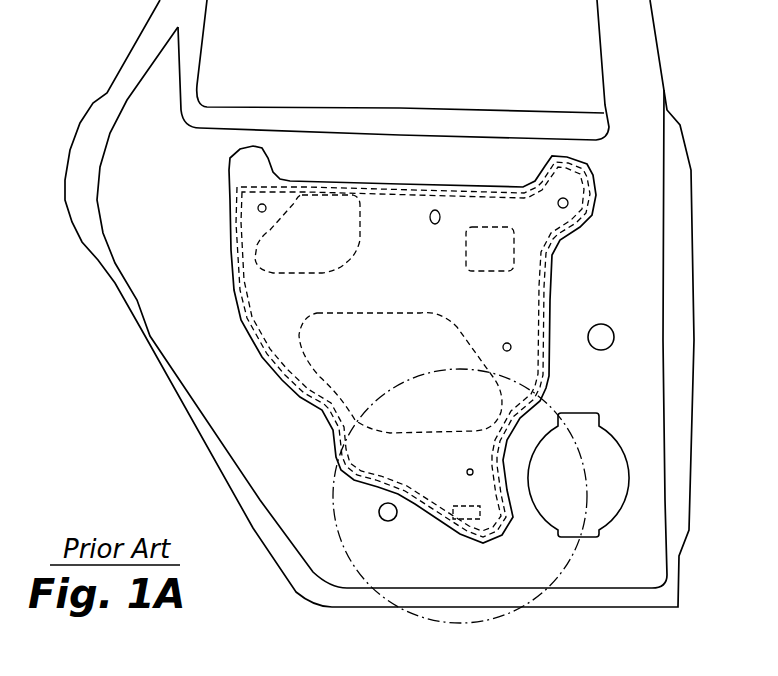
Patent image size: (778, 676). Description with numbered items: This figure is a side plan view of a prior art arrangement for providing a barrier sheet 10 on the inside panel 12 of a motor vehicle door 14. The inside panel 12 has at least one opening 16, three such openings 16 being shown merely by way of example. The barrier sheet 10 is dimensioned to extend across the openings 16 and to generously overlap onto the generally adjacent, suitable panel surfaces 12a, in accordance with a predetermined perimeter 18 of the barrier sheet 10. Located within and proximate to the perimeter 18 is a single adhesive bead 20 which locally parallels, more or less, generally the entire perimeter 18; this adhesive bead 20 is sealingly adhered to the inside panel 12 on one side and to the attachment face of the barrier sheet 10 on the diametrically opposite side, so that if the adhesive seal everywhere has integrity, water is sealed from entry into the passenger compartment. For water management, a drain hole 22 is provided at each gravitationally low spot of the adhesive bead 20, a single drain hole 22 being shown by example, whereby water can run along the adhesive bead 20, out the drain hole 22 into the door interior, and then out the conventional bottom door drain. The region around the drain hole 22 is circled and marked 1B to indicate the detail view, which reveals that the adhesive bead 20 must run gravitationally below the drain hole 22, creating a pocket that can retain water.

The barrier sheet 10 is at (523, 295).
The inside panel 12 is at (181, 269).
The panel surfaces 12a is at (420, 176).
The motor vehicle door 14 is at (137, 338).
The opening 16 is at (256, 272).
The perimeter 18 is at (340, 182).
The adhesive bead 20 is at (342, 538).
The drain hole 22 is at (478, 510).
The detail view indicator FIG. 1B is at (523, 613).